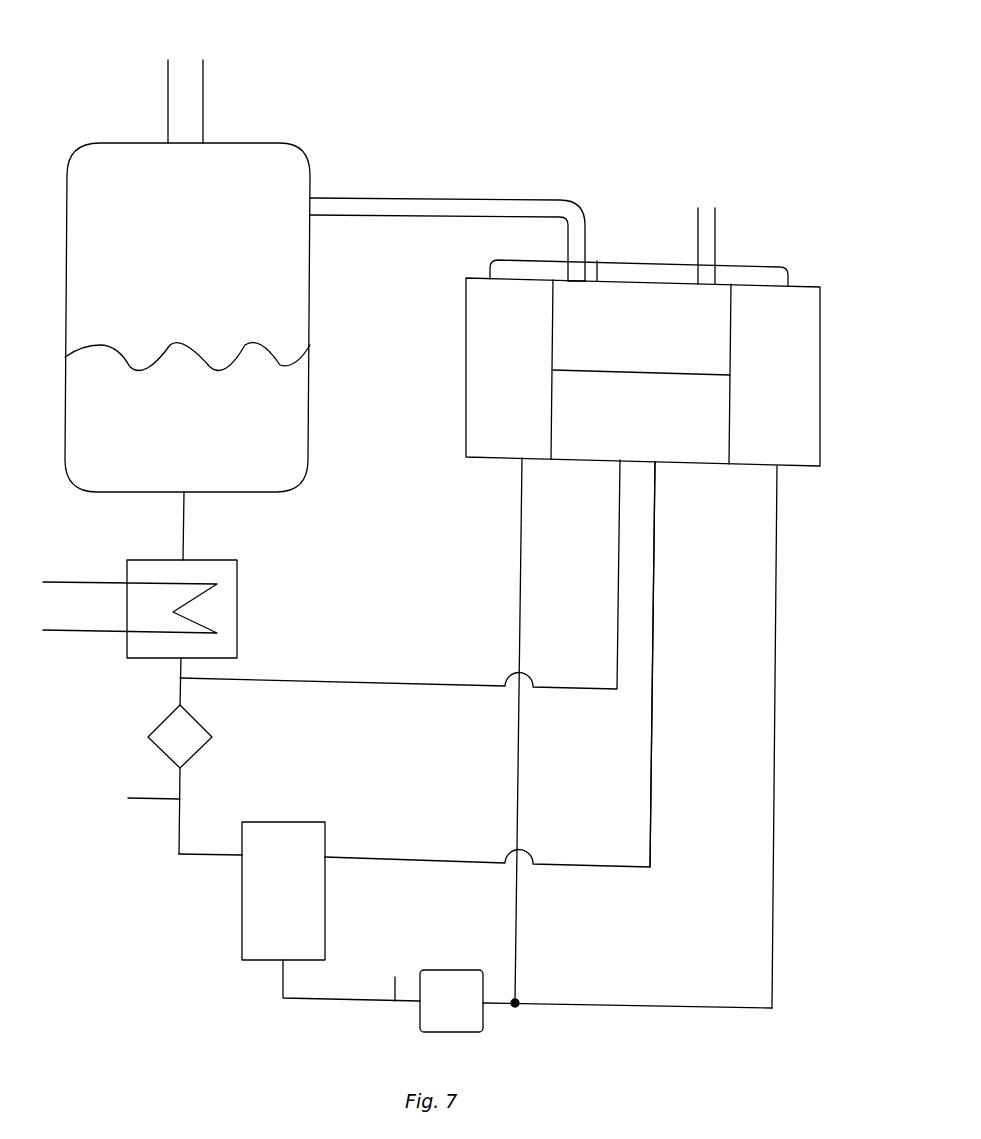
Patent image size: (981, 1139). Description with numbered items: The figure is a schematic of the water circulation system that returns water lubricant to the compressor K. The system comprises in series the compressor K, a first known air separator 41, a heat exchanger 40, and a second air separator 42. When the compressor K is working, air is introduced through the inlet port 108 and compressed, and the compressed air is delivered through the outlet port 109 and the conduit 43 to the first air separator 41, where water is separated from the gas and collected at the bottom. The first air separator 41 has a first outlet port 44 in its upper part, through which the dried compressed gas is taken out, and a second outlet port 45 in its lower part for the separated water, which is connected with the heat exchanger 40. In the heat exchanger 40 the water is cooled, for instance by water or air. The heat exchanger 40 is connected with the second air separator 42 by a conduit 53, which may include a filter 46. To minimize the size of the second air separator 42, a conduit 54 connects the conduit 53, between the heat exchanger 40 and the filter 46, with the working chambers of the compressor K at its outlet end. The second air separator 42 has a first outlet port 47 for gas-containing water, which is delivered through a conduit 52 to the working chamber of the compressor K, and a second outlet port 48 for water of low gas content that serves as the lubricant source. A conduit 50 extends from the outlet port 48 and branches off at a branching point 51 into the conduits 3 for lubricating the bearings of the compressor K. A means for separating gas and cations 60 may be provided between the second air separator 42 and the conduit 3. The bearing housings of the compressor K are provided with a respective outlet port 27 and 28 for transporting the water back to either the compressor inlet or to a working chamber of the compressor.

The first air separator 41 is at (312, 165).
The first outlet port 44 is at (208, 135).
The conduit 43 is at (507, 197).
The compressor K is at (832, 343).
The outlet port 27 is at (788, 277).
The outlet port 28 is at (602, 261).
The outlet port 109 is at (565, 277).
The inlet port 108 is at (718, 283).
The second outlet port 45 is at (188, 494).
The heat exchanger 40 is at (225, 592).
The filter 46 is at (212, 737).
The conduit 54 is at (385, 683).
The conduit 53 is at (138, 799).
The second air separator 42 is at (242, 903).
The first outlet port 47 is at (330, 853).
The second outlet port 48 is at (277, 962).
The conduit 50 is at (394, 979).
The means for separating gas and cations 60 is at (458, 970).
The branching point 51 is at (518, 1000).
The conduit 52 is at (653, 608).
The conduits 3 is at (521, 602).